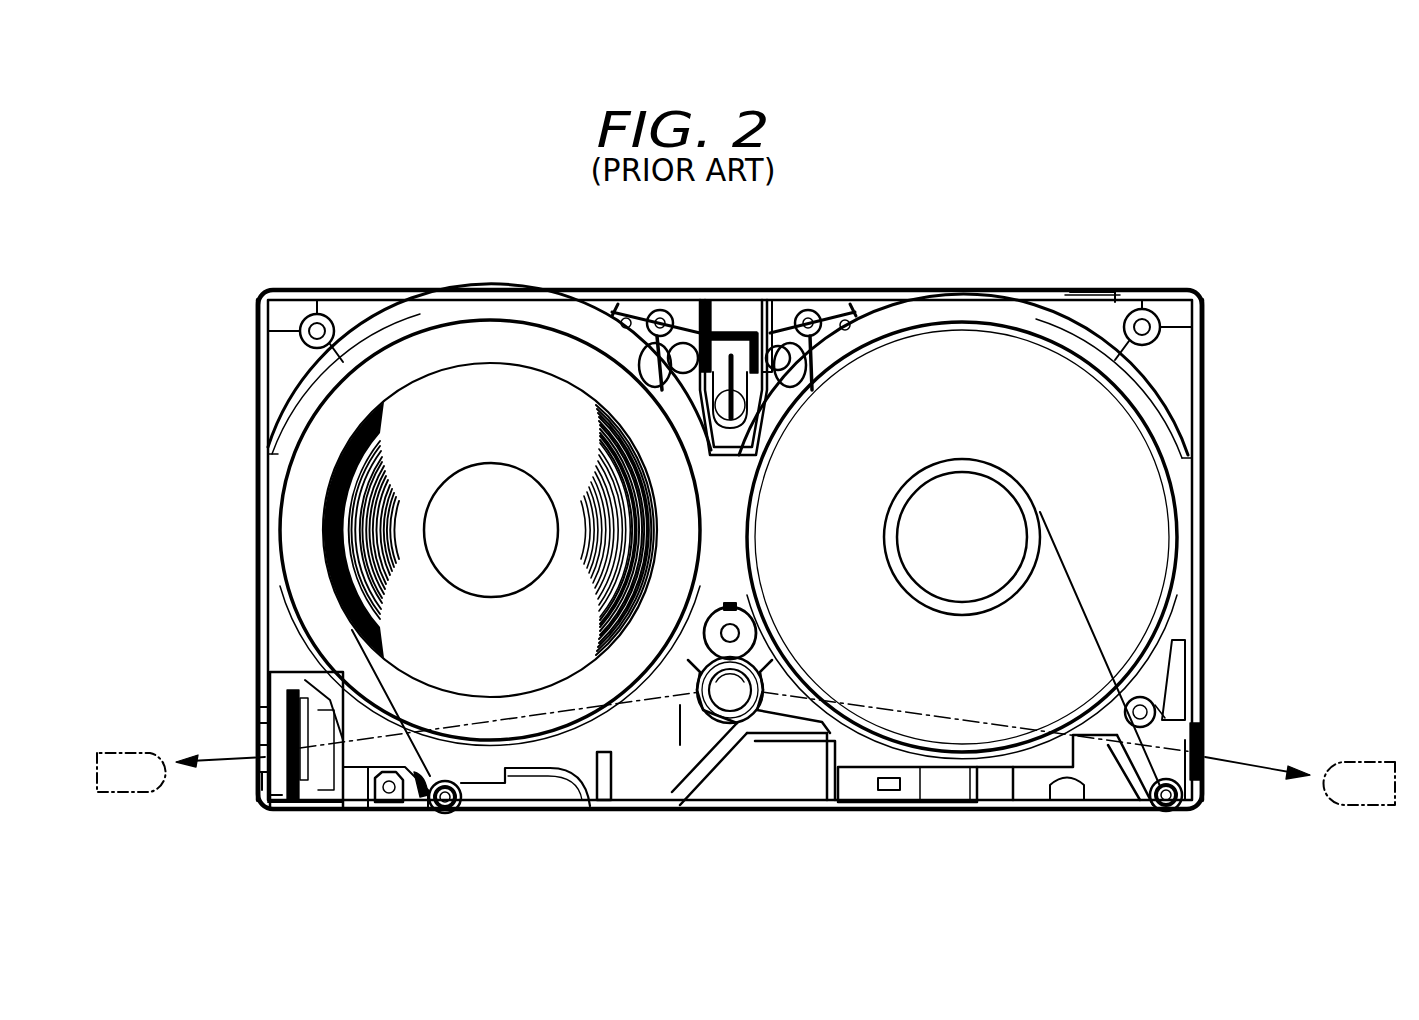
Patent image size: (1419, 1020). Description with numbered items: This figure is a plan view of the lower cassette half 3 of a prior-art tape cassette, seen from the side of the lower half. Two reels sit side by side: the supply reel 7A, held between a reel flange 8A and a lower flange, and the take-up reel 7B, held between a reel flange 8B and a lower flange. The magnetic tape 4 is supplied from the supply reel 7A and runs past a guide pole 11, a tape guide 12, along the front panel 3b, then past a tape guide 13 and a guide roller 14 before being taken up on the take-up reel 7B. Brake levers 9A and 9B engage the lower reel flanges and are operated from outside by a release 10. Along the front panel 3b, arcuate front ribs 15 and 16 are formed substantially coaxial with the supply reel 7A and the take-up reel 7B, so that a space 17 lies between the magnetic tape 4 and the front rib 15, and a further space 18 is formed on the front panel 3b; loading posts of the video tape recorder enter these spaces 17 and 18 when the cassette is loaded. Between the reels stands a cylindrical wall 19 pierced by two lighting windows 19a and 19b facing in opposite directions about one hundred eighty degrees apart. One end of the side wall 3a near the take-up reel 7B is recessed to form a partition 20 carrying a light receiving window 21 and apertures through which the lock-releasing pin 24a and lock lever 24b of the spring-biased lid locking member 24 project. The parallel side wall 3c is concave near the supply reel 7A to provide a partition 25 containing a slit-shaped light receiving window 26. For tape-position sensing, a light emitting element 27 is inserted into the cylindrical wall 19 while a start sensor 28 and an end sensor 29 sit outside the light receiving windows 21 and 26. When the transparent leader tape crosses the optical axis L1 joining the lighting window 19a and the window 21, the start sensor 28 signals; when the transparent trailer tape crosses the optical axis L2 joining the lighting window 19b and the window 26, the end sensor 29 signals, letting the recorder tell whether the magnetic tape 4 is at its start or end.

The lower cassette half 3 is at (1040, 290).
The side wall 3a is at (258, 358).
The front panel 3b is at (920, 805).
The side wall 3c is at (1202, 352).
The magnetic tape 4 is at (825, 802).
The supply reel 7A is at (965, 457).
The take-up reel 7B is at (492, 460).
The reel flange 8A is at (932, 318).
The reel flange 8B is at (455, 318).
The brake lever 9A is at (807, 316).
The brake lever 9B is at (659, 316).
The release 10 is at (736, 336).
The guide pole 11 is at (1152, 700).
The tape guide 12 is at (1160, 812).
The tape guide 13 is at (449, 812).
The guide roller 14 is at (390, 806).
The front rib 15 is at (1015, 802).
The front rib 16 is at (601, 800).
The space 17 is at (1075, 790).
The space 18 is at (735, 805).
The cylindrical wall 19 is at (757, 675).
The lighting window 19a is at (690, 716).
The lighting window 19b is at (764, 697).
The partition 20 is at (272, 810).
The light receiving window 21 is at (262, 792).
The lid locking member 24 is at (300, 804).
The lock-releasing pin 24a is at (258, 712).
The lock lever 24b is at (258, 758).
The partition 25 is at (1198, 800).
The light receiving window 26 is at (1197, 762).
The light emitting element 27 is at (745, 780).
The start sensor 28 is at (140, 798).
The end sensor 29 is at (1343, 805).
The optical axis L1 is at (490, 715).
The optical axis L2 is at (925, 715).